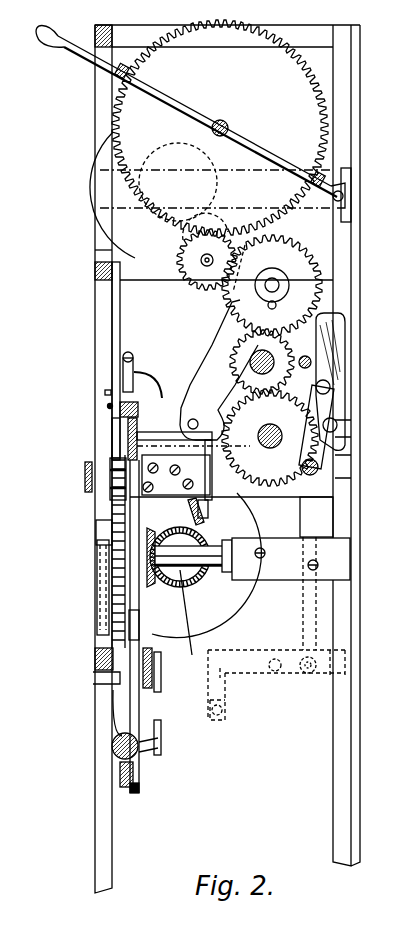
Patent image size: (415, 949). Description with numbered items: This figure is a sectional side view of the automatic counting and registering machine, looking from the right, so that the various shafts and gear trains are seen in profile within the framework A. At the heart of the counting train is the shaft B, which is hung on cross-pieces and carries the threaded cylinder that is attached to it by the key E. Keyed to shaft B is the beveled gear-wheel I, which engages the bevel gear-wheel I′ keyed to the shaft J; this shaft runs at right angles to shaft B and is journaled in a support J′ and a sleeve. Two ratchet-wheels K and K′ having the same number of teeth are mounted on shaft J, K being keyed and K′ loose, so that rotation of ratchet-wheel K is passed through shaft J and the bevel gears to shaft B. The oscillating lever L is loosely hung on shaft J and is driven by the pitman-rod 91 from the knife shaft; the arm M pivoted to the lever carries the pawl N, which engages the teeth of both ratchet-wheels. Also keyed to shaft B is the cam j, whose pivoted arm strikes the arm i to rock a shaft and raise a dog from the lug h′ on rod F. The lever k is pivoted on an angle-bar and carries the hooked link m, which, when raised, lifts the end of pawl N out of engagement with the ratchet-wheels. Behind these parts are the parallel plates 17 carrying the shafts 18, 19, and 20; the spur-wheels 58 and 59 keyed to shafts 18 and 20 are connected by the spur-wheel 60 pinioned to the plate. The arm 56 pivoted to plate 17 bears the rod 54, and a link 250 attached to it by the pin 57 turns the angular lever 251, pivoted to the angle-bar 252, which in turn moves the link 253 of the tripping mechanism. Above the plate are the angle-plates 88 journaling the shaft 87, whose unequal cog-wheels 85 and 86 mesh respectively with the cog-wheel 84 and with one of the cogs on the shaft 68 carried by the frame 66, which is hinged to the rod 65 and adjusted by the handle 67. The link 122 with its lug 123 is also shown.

The frame A is at (95, 320).
The cog-wheel 84 is at (155, 212).
The shaft 68 is at (230, 124).
The frame 66 is at (160, 94).
The handle 67 is at (52, 24).
The rod 65 is at (346, 195).
The cog-wheel 86 is at (207, 260).
The cog-wheel 85 is at (184, 272).
The shaft 87 is at (206, 268).
The angle-plates 88 is at (275, 285).
The shaft 18 is at (281, 288).
The spur-wheel 58 is at (250, 295).
The parallel plates 17 is at (219, 342).
The spur-wheel 60 is at (262, 362).
The spur-wheel 59 is at (270, 438).
The shaft 20 is at (280, 431).
The shaft 19 is at (305, 356).
The rod 54 is at (328, 382).
The arm 56 is at (327, 435).
The pin 57 is at (315, 465).
The link 122 is at (134, 368).
The lug 123 is at (104, 393).
The lug h′ is at (112, 430).
The lever k is at (92, 470).
The arm i is at (206, 487).
The key E is at (194, 476).
The ratchet-wheel K′ is at (126, 519).
The ratchet-wheel K is at (110, 521).
The link m is at (100, 543).
The support J′ is at (100, 578).
The beveled gear-wheel I is at (206, 540).
The cam j is at (203, 536).
The bevel gear-wheel I′ is at (150, 582).
The shaft J is at (244, 560).
The shaft B is at (190, 620).
The arm M is at (140, 620).
The pawl N is at (115, 644).
The oscillating lever L is at (148, 712).
The pitman-rod 91 is at (138, 768).
The link 250 is at (310, 594).
The angular lever 251 is at (276, 685).
The angle-bar 252 is at (322, 674).
The link 253 is at (222, 722).